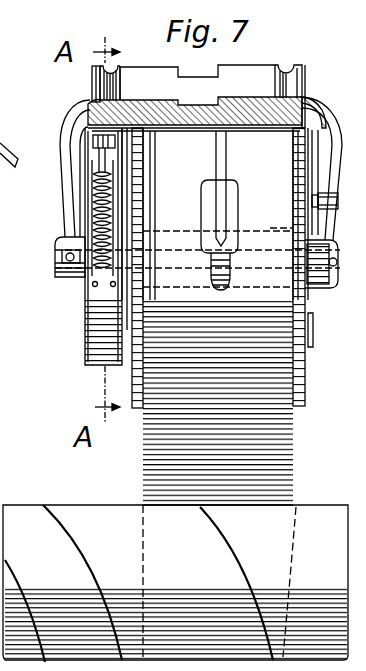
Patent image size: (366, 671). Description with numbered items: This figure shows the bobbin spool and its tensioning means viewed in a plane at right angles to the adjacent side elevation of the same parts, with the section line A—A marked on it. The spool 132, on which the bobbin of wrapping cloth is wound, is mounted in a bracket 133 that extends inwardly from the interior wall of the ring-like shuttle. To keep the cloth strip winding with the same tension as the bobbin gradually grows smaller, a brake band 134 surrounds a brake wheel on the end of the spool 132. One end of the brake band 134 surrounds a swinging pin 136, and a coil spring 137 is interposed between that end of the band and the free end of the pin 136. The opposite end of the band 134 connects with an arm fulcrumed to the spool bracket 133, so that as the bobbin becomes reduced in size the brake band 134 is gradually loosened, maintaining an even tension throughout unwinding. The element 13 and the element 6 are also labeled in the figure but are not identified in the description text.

The rod 13 is at (230, 213).
The bracket bolt 132 is at (305, 373).
The arm 133 is at (64, 132).
The nut housing 134 is at (90, 326).
The spring 136 is at (123, 157).
The bracket 137 is at (78, 280).
The element 6 is at (9, 186).